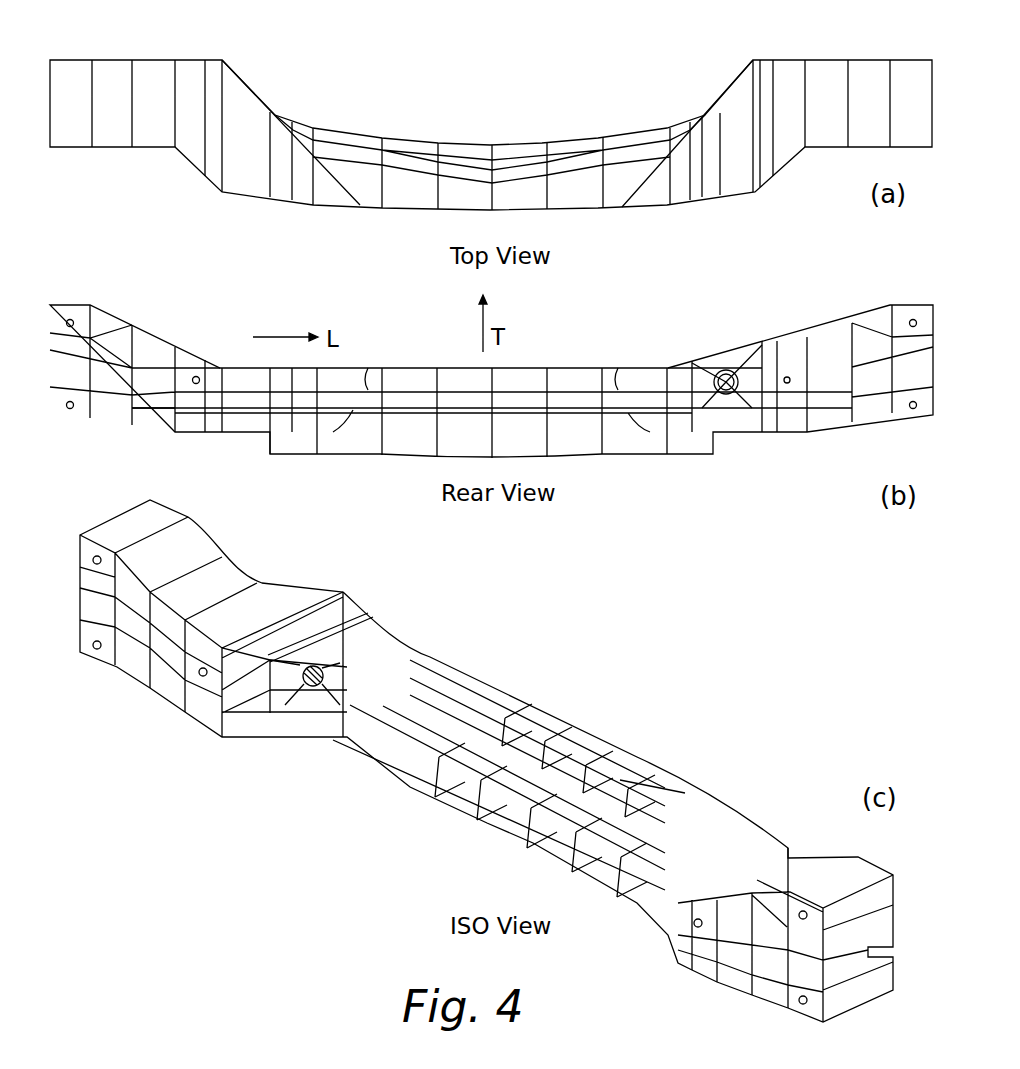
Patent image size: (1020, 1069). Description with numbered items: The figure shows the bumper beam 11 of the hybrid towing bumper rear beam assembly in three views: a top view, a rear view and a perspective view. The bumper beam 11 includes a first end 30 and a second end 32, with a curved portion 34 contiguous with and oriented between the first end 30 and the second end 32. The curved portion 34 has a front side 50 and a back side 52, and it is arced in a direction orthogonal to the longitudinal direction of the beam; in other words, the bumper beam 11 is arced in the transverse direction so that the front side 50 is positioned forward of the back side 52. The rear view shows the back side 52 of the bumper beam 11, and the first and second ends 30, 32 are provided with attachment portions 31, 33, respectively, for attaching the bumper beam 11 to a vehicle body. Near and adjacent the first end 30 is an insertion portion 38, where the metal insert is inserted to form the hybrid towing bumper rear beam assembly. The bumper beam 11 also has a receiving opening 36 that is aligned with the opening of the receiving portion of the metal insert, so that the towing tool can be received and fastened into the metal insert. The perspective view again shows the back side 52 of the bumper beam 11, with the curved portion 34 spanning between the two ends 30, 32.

The bumper beam 11 is at (548, 70).
The first end 30 is at (913, 95).
The attachment portion 31 is at (915, 318).
The second end 32 is at (117, 85).
The attachment portion 33 is at (70, 318).
The curved portion 34 is at (410, 190).
The receiving opening 36 is at (727, 370).
The insertion portion 38 is at (700, 372).
The front side 50 is at (578, 210).
The back side 52 is at (468, 143).